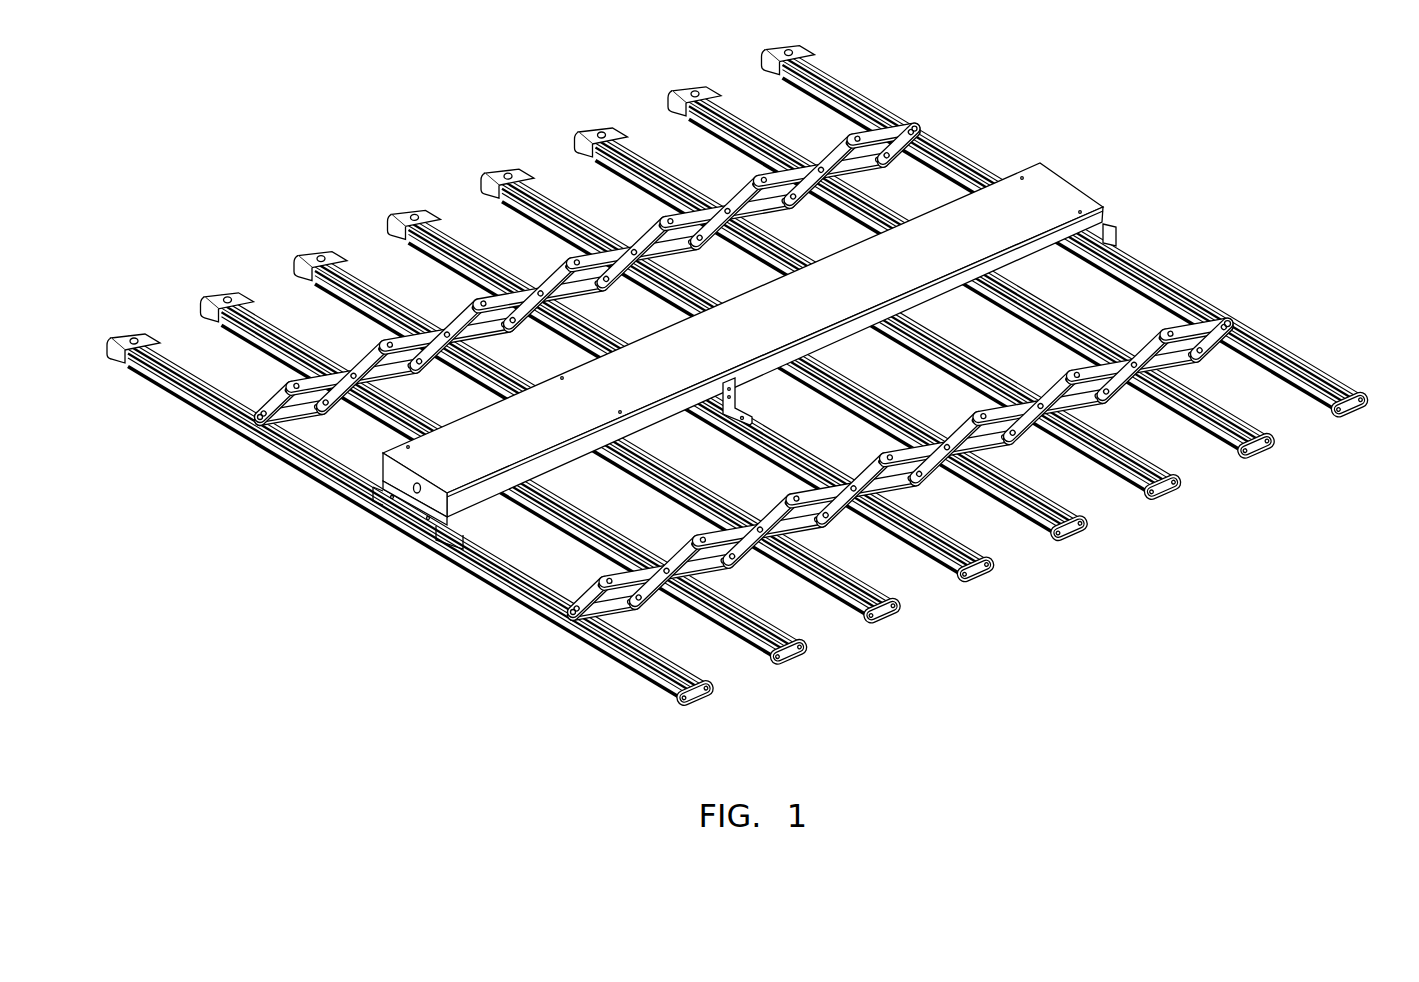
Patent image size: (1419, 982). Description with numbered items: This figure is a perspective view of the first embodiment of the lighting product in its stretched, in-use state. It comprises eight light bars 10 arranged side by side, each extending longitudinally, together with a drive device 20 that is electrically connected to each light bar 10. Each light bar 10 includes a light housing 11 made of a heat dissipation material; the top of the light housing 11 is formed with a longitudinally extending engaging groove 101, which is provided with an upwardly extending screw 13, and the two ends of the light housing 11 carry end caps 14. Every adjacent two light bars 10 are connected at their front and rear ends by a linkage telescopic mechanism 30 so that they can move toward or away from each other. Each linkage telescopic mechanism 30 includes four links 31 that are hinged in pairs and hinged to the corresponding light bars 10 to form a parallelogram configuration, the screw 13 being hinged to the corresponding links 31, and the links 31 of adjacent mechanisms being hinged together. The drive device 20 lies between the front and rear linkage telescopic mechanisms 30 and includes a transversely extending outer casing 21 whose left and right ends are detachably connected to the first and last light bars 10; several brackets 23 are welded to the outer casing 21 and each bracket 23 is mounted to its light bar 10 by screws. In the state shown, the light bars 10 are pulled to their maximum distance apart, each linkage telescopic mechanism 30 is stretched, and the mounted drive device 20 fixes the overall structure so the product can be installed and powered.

The light bar 10 is at (753, 377).
The light housing 11 is at (1074, 227).
The engaging groove 101 is at (1070, 233).
The screw 13 is at (1230, 322).
The end cap 14 is at (1364, 431).
The drive device 20 is at (753, 317).
The outer casing 21 is at (986, 212).
The bracket 23 is at (1108, 230).
The linkage telescopic mechanism 30 is at (763, 372).
The link 31 is at (1161, 330).